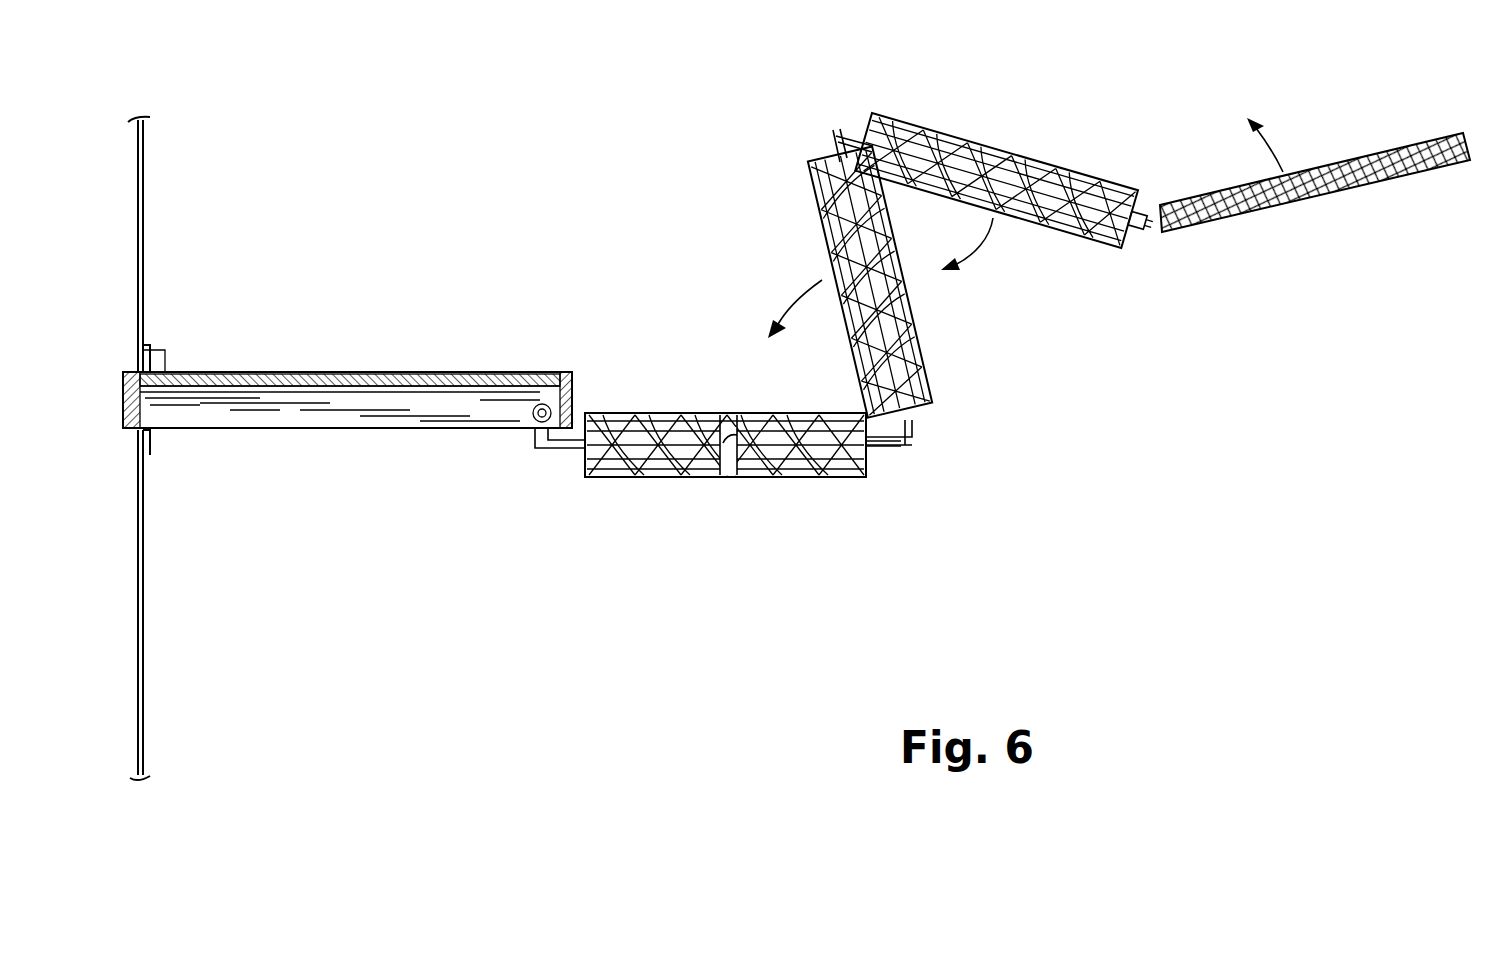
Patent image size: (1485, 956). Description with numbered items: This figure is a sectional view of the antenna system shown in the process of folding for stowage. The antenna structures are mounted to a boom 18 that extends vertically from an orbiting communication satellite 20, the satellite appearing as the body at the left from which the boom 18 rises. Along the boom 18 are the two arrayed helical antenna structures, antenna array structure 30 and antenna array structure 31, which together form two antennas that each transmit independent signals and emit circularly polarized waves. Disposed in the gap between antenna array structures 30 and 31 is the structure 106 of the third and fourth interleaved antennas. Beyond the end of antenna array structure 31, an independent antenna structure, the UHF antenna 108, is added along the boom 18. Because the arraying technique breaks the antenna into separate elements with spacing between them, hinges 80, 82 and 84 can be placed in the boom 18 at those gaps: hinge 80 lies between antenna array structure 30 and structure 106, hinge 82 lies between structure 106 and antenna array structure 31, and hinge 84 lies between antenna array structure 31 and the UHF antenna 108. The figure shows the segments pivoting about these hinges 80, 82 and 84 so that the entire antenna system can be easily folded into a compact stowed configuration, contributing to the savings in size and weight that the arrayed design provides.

The boom 18 is at (545, 456).
The orbiting communication satellite 20 is at (331, 375).
The antenna array structure 30 is at (803, 478).
The antenna array structure 31 is at (1043, 160).
The hinge 80 is at (913, 437).
The hinge 82 is at (833, 131).
The hinge 84 is at (1140, 241).
The structure 106 is at (921, 336).
The UHF antenna 108 is at (1368, 151).